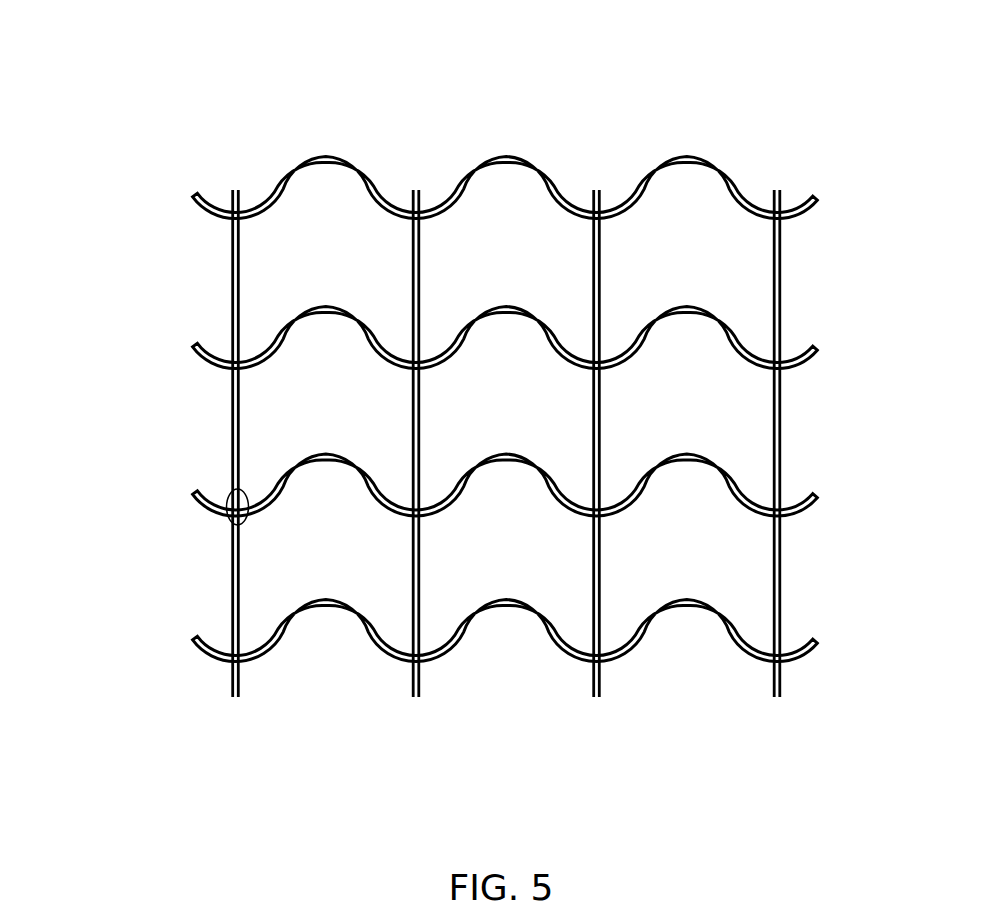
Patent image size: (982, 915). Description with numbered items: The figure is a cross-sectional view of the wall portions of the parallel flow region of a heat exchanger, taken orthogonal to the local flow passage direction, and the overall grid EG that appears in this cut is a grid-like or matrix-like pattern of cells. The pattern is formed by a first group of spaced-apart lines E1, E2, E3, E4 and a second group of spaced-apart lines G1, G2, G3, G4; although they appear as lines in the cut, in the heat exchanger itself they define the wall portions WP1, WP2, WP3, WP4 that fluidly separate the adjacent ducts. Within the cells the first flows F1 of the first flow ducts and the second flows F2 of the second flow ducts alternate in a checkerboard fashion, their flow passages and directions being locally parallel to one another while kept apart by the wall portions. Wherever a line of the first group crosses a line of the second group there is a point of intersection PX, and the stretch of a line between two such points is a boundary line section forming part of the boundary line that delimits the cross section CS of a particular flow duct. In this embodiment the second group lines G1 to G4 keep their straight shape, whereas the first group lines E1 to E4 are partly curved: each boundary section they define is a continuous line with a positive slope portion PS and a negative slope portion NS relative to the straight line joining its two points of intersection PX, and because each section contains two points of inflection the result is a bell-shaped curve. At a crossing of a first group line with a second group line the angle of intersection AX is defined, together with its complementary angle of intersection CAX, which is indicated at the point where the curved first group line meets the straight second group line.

The electrode grid EG is at (459, 362).
The first group line E1 is at (751, 178).
The first group line E2 is at (751, 326).
The first group line E3 is at (749, 475).
The first group line E4 is at (756, 630).
The second group line G1 is at (214, 258).
The second group line G2 is at (398, 399).
The second group line G3 is at (579, 603).
The second group line G4 is at (759, 604).
The wall portion WP1 is at (555, 157).
The wall portion WP2 is at (432, 241).
The wall portion WP3 is at (549, 289).
The wall portion WP4 is at (614, 241).
The first flow F1 is at (700, 562).
The second flow F2 is at (520, 562).
The point of intersection PX is at (240, 203).
The positive slope portion PS is at (272, 335).
The negative slope portion NS is at (381, 485).
The angle of intersection AX is at (233, 490).
The complementary angle of intersection CAX is at (237, 536).
The cross section CS is at (749, 414).